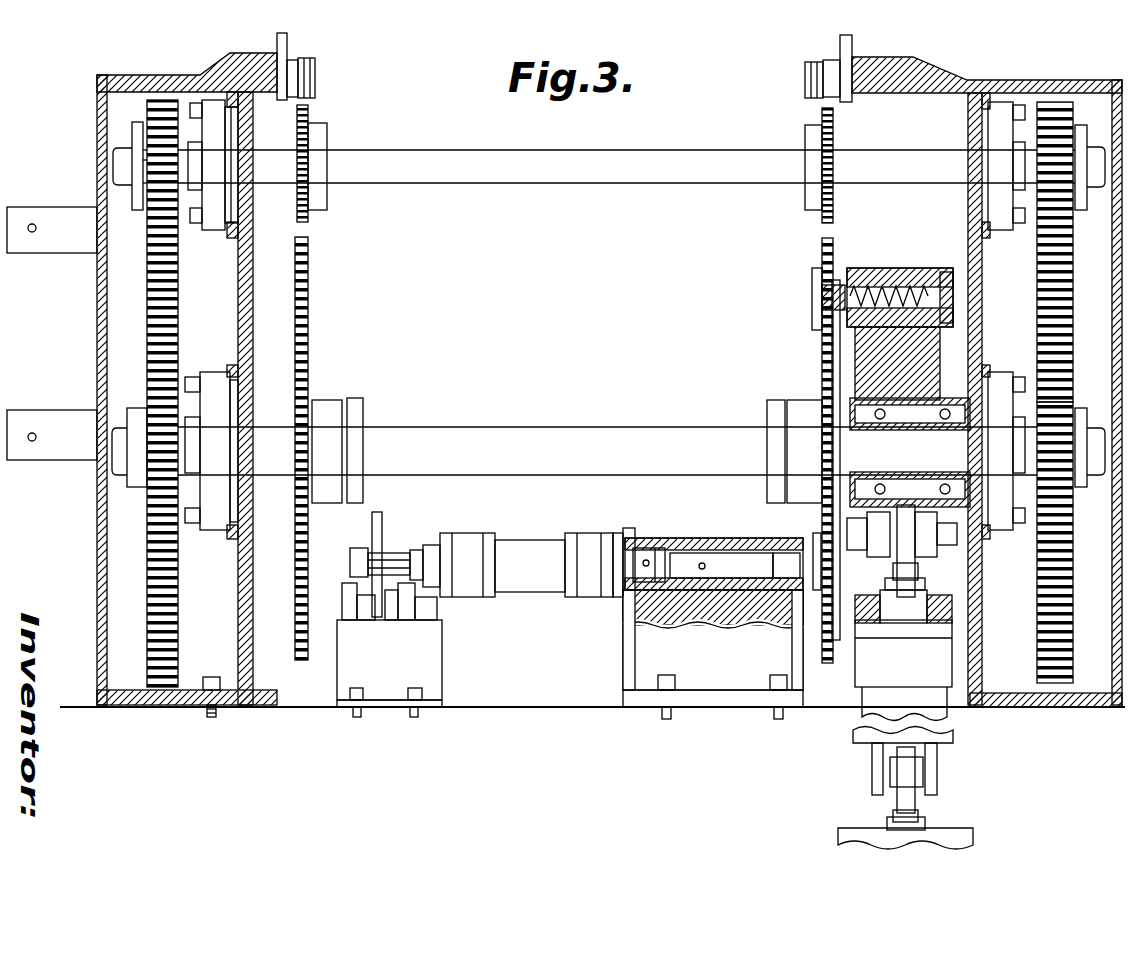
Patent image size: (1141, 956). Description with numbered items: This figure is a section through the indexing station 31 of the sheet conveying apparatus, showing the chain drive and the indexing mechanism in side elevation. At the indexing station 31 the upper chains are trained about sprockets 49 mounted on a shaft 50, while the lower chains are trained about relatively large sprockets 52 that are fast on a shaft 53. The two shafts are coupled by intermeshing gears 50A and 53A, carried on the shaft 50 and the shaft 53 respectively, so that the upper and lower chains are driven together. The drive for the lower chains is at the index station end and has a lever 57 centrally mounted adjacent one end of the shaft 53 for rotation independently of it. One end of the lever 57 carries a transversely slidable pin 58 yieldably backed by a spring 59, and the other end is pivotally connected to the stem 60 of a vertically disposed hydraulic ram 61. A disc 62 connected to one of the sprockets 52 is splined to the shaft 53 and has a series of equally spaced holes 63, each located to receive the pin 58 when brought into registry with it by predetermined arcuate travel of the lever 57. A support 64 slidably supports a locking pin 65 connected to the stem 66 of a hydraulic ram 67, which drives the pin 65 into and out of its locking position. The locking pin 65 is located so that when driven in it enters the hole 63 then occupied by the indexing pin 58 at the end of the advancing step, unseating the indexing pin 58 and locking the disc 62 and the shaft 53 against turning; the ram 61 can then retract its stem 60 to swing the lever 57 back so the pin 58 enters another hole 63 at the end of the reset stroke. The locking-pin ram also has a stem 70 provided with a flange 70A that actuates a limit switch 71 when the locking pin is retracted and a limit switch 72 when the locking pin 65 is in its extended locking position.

The indexing station 31 is at (95, 121).
The sprockets 49 is at (308, 113).
The shaft 50 is at (569, 183).
The gear 50A is at (1056, 102).
The sprockets 52 is at (308, 313).
The shaft 53 is at (580, 435).
The gear 53A is at (1050, 685).
The lever 57 is at (935, 347).
The pin 58 is at (812, 297).
The spring 59 is at (935, 268).
The stem 60 is at (915, 570).
The hydraulic ram 61 is at (870, 672).
The disc 62 is at (832, 372).
The holes 63 is at (822, 295).
The support 64 is at (623, 620).
The locking pin 65 is at (750, 562).
The stem 66 is at (657, 548).
The hydraulic ram 67 is at (538, 545).
The stem 70 is at (413, 550).
The flange 70A is at (382, 530).
The limit switch 71 is at (363, 608).
The limit switch 72 is at (420, 612).